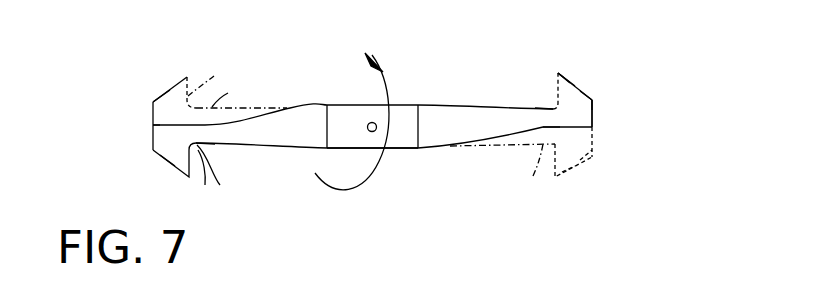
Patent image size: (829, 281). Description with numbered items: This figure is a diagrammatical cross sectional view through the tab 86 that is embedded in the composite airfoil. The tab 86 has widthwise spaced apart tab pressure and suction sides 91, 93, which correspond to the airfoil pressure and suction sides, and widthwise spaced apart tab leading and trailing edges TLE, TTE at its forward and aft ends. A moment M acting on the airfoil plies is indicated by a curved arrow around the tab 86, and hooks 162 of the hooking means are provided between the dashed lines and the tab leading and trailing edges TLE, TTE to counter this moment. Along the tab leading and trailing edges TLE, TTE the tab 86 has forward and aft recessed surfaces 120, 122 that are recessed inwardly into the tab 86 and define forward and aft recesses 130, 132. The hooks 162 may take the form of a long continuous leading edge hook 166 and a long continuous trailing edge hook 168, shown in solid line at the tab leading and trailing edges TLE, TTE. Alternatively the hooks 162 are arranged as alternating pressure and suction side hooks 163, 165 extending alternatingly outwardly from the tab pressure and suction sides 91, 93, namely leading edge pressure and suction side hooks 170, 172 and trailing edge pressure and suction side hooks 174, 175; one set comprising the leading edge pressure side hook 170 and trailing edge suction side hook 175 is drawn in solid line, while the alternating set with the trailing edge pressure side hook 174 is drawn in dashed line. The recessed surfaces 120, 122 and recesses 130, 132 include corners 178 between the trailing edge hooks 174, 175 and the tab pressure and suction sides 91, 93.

The tab 86 is at (362, 103).
The tab pressure side 91 is at (407, 150).
The tab suction side 93 is at (414, 104).
The moment M is at (367, 121).
The forward recessed surface 120 is at (238, 108).
The aft recessed surface 122 is at (207, 144).
The forward recess 130 is at (214, 76).
The aft recess 132 is at (543, 72).
The hooks 162 is at (205, 79).
The pressure side hook 163 is at (175, 170).
The suction side hook 165 is at (162, 97).
The leading edge hook 166 is at (177, 145).
The trailing edge hook 168 is at (586, 100).
The leading edge pressure side hook 170 is at (158, 157).
The leading edge suction side hook 172 is at (173, 83).
The trailing edge pressure side hook 174 is at (574, 168).
The trailing edge suction side hook 175 is at (568, 83).
The corners 178 is at (220, 185).
The tab leading edge TLE is at (151, 126).
The tab trailing edge TTE is at (592, 126).